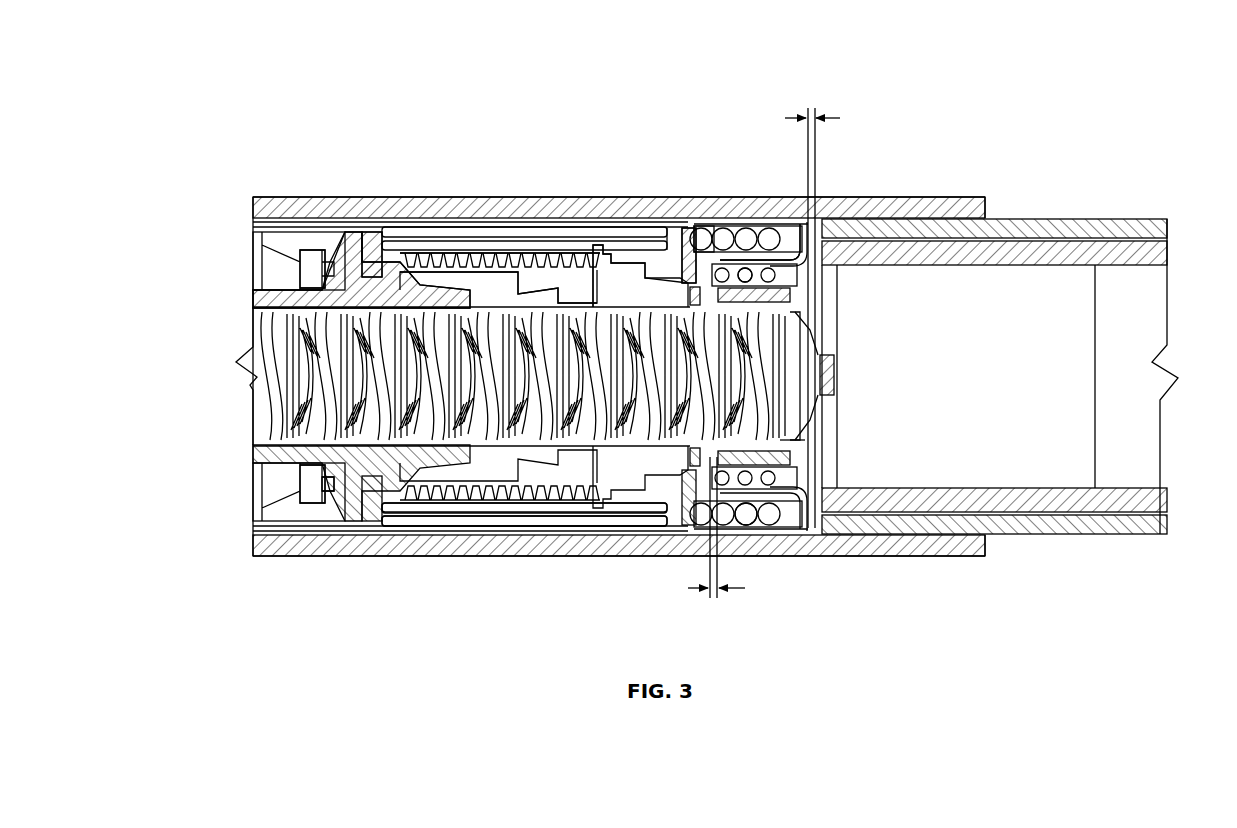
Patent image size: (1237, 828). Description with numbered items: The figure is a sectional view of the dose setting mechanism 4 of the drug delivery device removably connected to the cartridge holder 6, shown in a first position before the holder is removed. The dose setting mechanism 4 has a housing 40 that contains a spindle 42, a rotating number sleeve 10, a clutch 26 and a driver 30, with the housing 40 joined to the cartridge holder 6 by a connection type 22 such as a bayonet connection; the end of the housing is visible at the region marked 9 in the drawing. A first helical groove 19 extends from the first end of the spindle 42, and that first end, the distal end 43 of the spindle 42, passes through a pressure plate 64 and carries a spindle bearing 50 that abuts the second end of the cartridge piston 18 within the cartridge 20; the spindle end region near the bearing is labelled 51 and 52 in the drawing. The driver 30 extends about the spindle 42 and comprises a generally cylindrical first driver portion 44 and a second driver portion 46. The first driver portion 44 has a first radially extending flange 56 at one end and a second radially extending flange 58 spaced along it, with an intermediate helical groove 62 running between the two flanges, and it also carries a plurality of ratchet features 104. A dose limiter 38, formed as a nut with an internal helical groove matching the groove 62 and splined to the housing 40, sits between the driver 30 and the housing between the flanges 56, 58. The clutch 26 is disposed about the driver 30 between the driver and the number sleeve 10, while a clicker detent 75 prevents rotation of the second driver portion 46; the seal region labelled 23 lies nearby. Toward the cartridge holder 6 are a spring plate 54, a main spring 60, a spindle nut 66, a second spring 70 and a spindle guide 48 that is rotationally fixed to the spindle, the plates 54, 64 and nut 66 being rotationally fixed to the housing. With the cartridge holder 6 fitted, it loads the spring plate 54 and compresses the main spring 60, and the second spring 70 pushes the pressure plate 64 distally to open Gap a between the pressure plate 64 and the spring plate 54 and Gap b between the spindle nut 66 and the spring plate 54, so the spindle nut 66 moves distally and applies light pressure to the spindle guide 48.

The dose setting mechanism 4 is at (400, 75).
The number sleeve 10 is at (270, 221).
The housing 40 is at (358, 195).
The second driver portion 46 is at (340, 240).
The first radially extending flange 56 is at (380, 233).
The driver 30 is at (487, 250).
The intermediate helical groove 62 is at (527, 250).
The first driver portion 44 is at (568, 270).
The second radially extending flange 58 is at (605, 245).
The ratchet features 104 is at (672, 240).
The main spring 60 is at (688, 226).
The second spring 70 is at (708, 233).
The spindle nut 66 is at (740, 270).
The spring plate 54 is at (790, 277).
The pressure plate 64 is at (810, 220).
The spindle guide 48 is at (823, 250).
The cartridge holder 6 is at (1036, 218).
The cartridge 20 is at (1160, 252).
The cartridge piston 18 is at (1097, 300).
The clutch 26 is at (290, 270).
The spindle bearing 50 is at (840, 280).
The spindle end 51 is at (807, 317).
The distal end of the spindle 43 is at (840, 367).
The first helical groove 19 is at (780, 357).
The spindle 42 is at (253, 373).
The seal ring 23 is at (297, 492).
The collar 52 is at (790, 442).
The clicker detent 75 is at (323, 507).
The dose limiter 38 is at (575, 517).
The connection type 22 is at (886, 575).
The housing end 9 is at (978, 560).
The Gap a is at (822, 116).
The Gap b is at (732, 592).